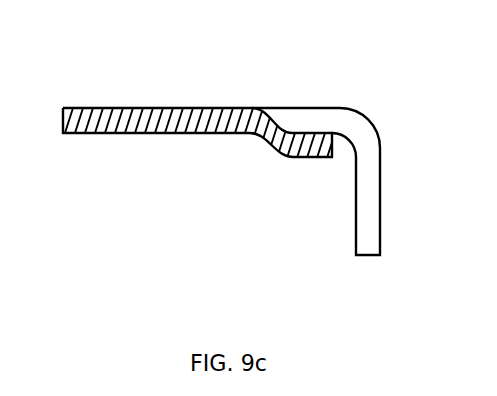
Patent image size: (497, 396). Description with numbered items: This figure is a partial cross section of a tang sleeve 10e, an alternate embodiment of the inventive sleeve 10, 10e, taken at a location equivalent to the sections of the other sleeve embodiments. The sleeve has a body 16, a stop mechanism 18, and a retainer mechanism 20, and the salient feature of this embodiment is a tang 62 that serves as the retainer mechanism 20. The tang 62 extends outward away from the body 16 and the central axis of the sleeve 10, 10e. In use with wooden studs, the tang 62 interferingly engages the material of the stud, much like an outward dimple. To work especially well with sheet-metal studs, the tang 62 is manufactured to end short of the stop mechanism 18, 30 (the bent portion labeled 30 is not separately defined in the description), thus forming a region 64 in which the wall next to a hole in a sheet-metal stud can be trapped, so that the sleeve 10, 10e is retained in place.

The sleeve 10 is at (173, 53).
The tang sleeve 10e is at (244, 167).
The body 16 is at (98, 134).
The retainer mechanism 20 is at (301, 157).
The tang 62 is at (291, 132).
The stop mechanism 18 is at (365, 255).
The flange 30 is at (248, 163).
The region 64 is at (347, 142).